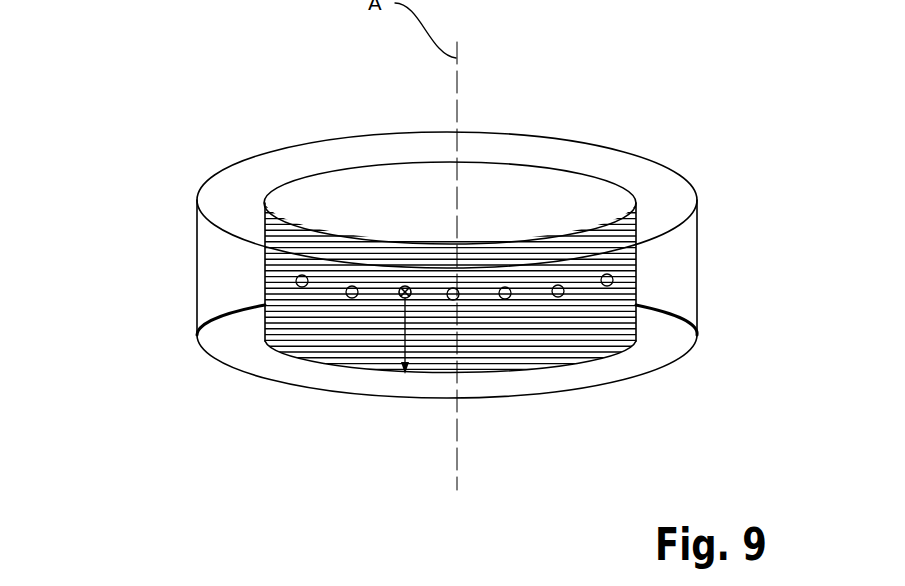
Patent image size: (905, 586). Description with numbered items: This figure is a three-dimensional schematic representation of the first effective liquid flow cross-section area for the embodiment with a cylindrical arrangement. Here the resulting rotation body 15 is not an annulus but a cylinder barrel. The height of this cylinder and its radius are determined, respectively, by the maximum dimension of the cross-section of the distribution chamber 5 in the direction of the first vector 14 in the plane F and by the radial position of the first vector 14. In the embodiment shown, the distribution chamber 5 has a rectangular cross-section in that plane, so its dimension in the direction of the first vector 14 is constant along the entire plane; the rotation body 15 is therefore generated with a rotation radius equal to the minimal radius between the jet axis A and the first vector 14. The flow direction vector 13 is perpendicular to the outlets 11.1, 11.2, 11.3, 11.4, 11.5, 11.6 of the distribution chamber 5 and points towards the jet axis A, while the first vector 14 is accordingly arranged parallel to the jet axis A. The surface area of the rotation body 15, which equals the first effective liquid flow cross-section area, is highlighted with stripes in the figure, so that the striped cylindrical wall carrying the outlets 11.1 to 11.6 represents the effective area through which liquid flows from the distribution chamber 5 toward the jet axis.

The distribution chamber 5 is at (208, 254).
The outlet 11.1 is at (301, 275).
The outlet 11.2 is at (351, 286).
The outlet 11.3 is at (404, 286).
The outlet 11.4 is at (506, 287).
The outlet 11.5 is at (559, 297).
The outlet 11.6 is at (608, 274).
The flow direction vector 13 is at (348, 296).
The first vector 14 is at (398, 336).
The rotation body 15 is at (636, 290).